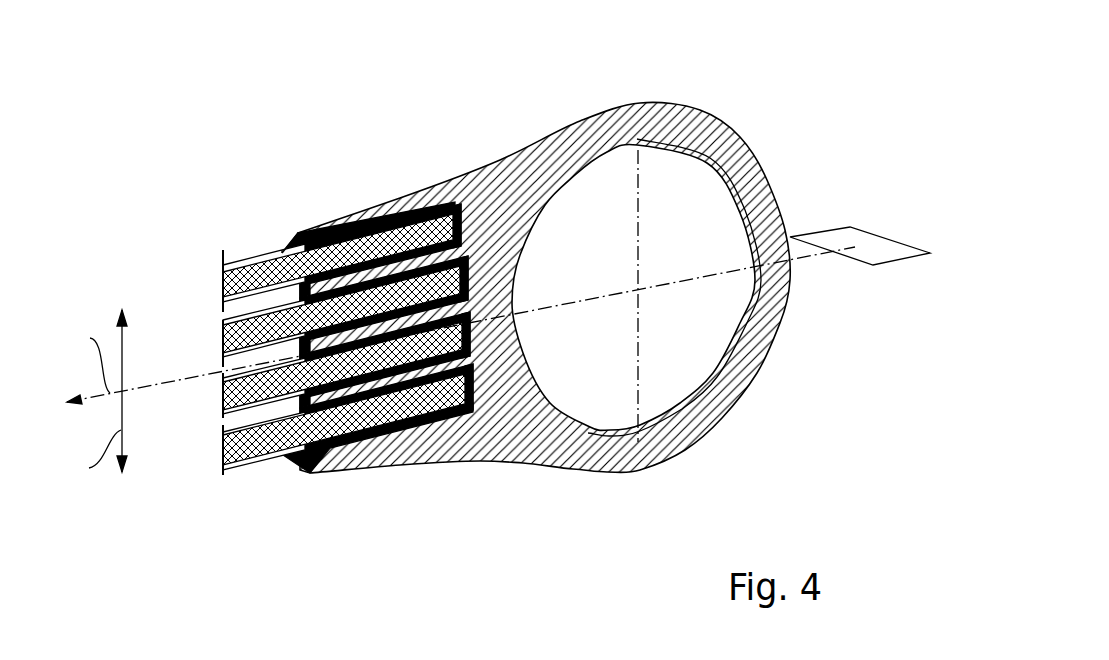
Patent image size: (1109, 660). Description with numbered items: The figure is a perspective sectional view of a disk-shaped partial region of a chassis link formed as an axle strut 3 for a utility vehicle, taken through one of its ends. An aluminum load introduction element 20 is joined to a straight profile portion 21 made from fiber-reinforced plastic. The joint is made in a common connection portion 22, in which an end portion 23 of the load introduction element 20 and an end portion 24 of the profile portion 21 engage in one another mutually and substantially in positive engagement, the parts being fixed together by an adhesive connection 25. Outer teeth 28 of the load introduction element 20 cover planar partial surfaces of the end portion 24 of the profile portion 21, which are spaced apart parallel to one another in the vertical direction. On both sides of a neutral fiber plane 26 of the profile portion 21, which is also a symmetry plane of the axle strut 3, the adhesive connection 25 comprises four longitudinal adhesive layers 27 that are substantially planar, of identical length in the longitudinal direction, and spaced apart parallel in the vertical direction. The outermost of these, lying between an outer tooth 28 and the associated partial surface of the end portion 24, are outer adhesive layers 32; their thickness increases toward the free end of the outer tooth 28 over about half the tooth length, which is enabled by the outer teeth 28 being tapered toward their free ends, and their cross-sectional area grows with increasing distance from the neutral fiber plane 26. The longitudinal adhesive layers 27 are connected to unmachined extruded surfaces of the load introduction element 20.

The axle strut 3 is at (780, 112).
The load introduction element 20 is at (716, 108).
The straight profile portion 21 is at (247, 470).
The common connection portion 22 is at (308, 523).
The end portion of the load introduction element 23 is at (308, 535).
The end portion of the profile portion 24 is at (462, 510).
The adhesive connection 25 is at (283, 243).
The neutral fiber plane 26 is at (843, 235).
The longitudinal adhesive layer 27 is at (458, 370).
The outer tooth 28 is at (362, 207).
The outer adhesive layer 32 is at (397, 313).